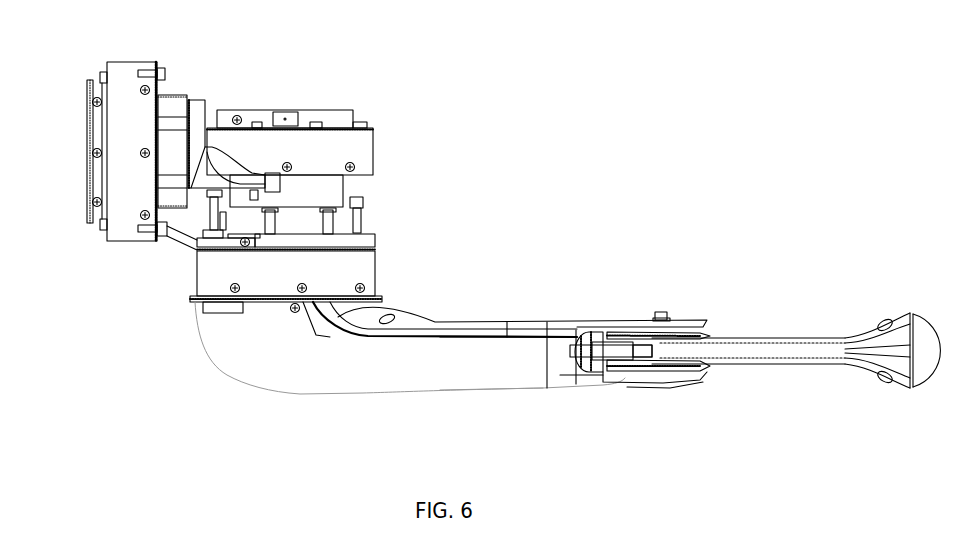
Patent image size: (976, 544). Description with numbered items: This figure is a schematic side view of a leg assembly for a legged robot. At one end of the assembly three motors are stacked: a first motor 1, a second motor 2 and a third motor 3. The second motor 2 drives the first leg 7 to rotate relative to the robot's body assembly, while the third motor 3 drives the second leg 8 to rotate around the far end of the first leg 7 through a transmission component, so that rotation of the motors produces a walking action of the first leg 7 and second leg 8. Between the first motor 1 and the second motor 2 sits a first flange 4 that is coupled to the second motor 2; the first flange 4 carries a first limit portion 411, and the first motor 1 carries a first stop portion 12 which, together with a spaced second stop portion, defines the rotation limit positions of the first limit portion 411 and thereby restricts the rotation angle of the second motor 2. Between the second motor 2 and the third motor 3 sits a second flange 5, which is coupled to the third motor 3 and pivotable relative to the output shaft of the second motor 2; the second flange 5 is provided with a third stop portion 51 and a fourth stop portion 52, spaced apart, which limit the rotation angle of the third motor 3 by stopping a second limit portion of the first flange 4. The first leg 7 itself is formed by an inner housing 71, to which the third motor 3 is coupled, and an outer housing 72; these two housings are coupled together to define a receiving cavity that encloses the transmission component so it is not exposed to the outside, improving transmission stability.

The first motor 1 is at (125, 73).
The first stop portion 12 is at (165, 183).
The first flange 4 is at (200, 113).
The first limit portion 411 is at (157, 240).
The third stop portion 51 is at (210, 203).
The second motor 2 is at (365, 165).
The fourth stop portion 52 is at (363, 200).
The second flange 5 is at (362, 231).
The third motor 3 is at (370, 280).
The first leg 7 is at (328, 387).
The inner housing 71 is at (468, 322).
The outer housing 72 is at (517, 387).
The second leg 8 is at (783, 343).